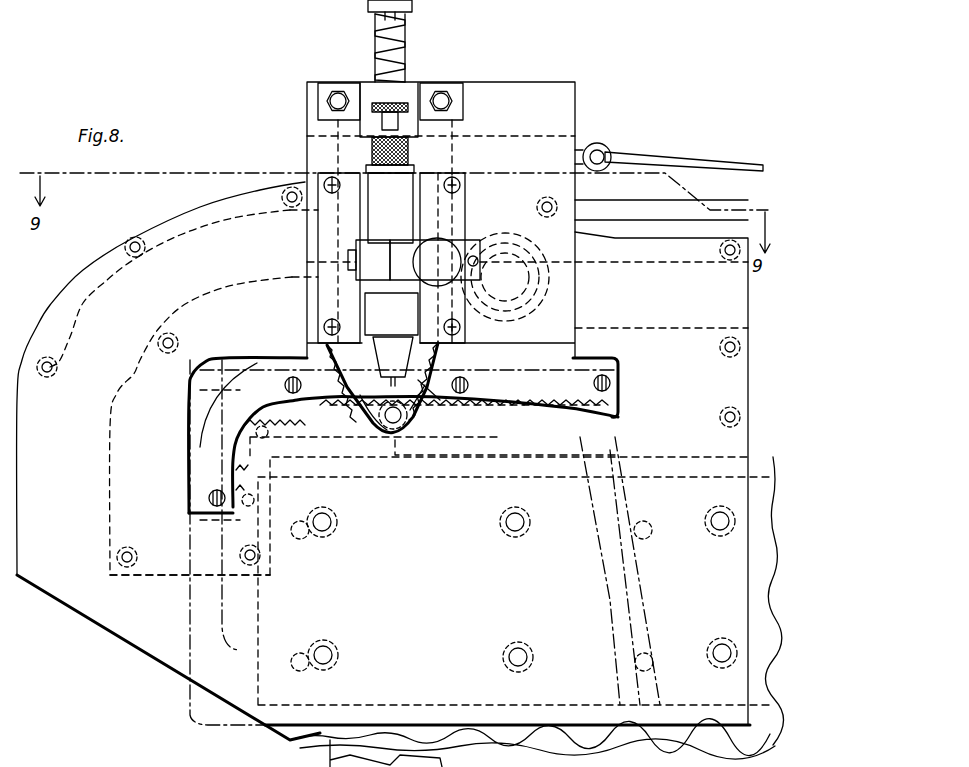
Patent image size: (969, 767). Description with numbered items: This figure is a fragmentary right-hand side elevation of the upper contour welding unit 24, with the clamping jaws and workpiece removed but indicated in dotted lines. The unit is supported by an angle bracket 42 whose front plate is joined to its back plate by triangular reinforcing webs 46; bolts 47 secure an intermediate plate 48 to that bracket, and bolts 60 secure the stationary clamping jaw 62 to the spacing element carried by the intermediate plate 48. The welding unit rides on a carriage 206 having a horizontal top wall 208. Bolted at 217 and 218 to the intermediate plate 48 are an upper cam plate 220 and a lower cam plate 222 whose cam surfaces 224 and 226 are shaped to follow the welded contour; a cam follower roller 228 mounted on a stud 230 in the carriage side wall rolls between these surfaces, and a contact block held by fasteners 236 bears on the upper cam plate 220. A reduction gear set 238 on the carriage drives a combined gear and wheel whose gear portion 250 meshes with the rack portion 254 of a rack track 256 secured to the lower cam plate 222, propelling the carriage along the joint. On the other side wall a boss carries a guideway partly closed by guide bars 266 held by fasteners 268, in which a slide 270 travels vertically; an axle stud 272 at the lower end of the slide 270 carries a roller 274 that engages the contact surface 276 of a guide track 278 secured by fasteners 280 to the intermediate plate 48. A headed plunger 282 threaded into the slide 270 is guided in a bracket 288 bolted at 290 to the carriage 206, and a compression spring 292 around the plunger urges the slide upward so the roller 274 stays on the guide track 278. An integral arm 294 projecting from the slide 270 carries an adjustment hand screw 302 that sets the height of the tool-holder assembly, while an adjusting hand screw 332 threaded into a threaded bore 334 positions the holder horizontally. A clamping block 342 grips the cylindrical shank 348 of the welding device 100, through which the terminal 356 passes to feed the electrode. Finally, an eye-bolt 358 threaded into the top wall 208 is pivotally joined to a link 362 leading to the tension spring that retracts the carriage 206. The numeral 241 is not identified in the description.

The upper contour welding unit 24 is at (294, 120).
The angle bracket 42 is at (250, 648).
The reinforcing webs 46 is at (560, 475).
The bolts 47 is at (337, 537).
The intermediate plate 48 is at (118, 625).
The bolts 60 is at (300, 540).
The stationary clamping jaw 62 is at (180, 720).
The welding device 100 is at (415, 322).
The carriage 206 is at (544, 72).
The top wall 208 is at (505, 135).
The bolts 217 is at (130, 245).
The bolts 218 is at (178, 343).
The upper cam plate 220 is at (47, 378).
The lower cam plate 222 is at (147, 580).
The cam surface 224 is at (178, 238).
The cam surface 226 is at (220, 295).
The cam follower roller 228 is at (550, 300).
The stud 230 is at (548, 272).
The fasteners 236 is at (578, 195).
The reduction gear set 238 is at (340, 757).
The rail 241 is at (578, 215).
The gear portion 250 is at (363, 305).
The rack portion 254 is at (550, 400).
The rack track 256 is at (455, 462).
The guide bars 266 is at (318, 214).
The fasteners 268 is at (458, 185).
The slide 270 is at (433, 410).
The axle stud 272 is at (393, 430).
The roller 274 is at (375, 428).
The contact surface 276 is at (240, 482).
The guide track 278 is at (200, 445).
The fasteners 280 is at (210, 497).
The headed plunger 282 is at (405, 36).
The bracket 288 is at (405, 92).
The bolts 290 is at (452, 95).
The compression spring 292 is at (380, 40).
The arm 294 is at (366, 158).
The adjustment hand screw 302 is at (378, 103).
The adjusting hand screw 332 is at (455, 250).
The threaded bore 334 is at (348, 260).
The clamping block 342 is at (356, 250).
The cylindrical shank 348 is at (390, 208).
The terminal 356 is at (410, 150).
The eye-bolt 358 is at (605, 143).
The link 362 is at (692, 160).